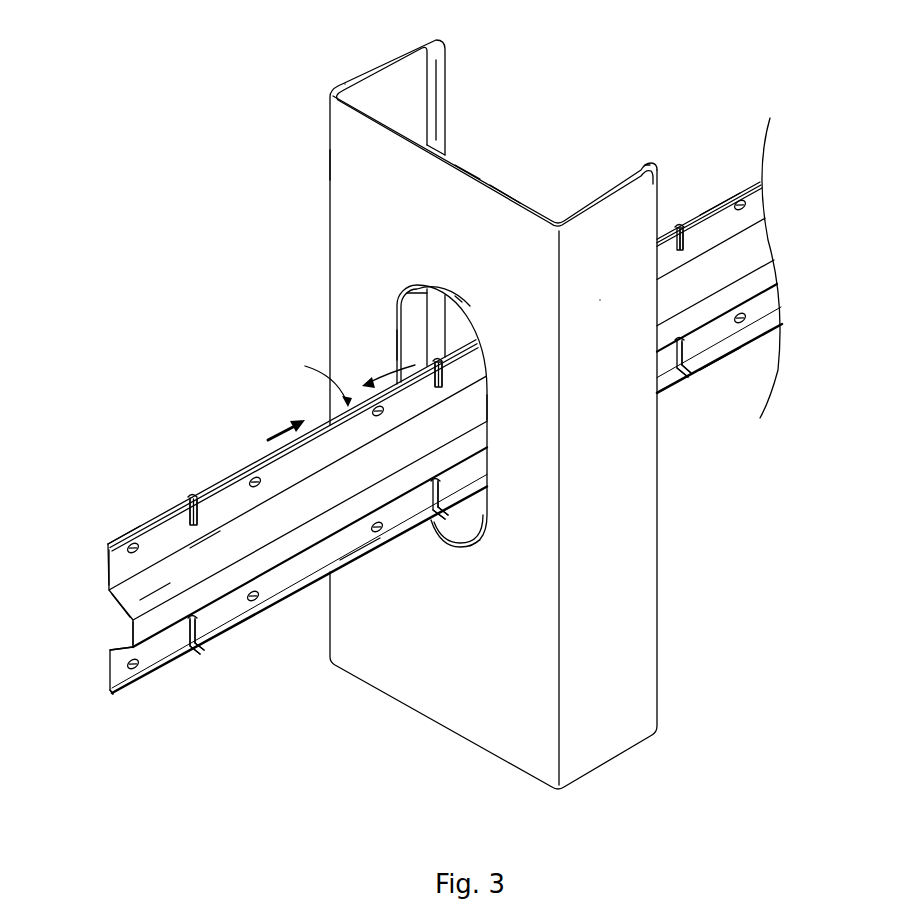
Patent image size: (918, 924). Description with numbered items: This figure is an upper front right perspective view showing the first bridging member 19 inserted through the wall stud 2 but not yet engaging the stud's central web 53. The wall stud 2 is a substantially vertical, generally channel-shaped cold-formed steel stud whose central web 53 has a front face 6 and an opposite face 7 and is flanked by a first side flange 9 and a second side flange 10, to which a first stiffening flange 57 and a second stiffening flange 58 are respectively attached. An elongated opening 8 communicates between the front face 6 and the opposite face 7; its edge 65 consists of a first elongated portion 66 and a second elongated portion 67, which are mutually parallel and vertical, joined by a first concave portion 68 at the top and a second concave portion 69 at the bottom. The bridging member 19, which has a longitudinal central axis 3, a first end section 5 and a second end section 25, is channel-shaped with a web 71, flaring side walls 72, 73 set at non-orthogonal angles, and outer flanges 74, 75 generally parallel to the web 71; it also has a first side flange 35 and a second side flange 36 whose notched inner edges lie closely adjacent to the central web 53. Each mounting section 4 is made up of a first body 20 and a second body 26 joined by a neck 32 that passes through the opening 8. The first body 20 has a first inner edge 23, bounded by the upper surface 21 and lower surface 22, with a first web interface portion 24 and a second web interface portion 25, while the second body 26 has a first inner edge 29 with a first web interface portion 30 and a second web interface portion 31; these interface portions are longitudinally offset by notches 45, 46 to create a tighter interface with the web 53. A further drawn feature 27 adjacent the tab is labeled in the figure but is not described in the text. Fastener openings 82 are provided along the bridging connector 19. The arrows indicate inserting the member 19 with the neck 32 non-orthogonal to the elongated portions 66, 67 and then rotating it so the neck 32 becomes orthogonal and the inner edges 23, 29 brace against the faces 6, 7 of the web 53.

The wall stud 2 is at (441, 32).
The central axis 3 is at (92, 657).
The mounting section 4 is at (173, 503).
The first end section 5 is at (108, 691).
The front face 6 is at (338, 167).
The opposite face 7 is at (498, 183).
The elongated opening 8 is at (455, 313).
The first side flange 9 is at (375, 68).
The second side flange 10 is at (637, 203).
The first bridging member 19 is at (350, 379).
The first body 20 is at (429, 390).
The upper surface 21 is at (136, 586).
The lower surface 22 is at (108, 561).
The first inner edge 23 is at (184, 526).
The first web interface portion 24 is at (180, 506).
The second web interface portion 25 is at (181, 649).
The second body 26 is at (448, 369).
The tab stem 27 is at (191, 626).
The first inner edge 29 is at (198, 510).
The first web interface portion 30 is at (688, 244).
The second web interface portion 31 is at (206, 636).
The neck 32 is at (201, 566).
The first side flange 35 is at (738, 189).
The second side flange 36 is at (745, 343).
The notch 45 is at (436, 360).
The notch 46 is at (205, 653).
The central web 53 is at (471, 166).
The first stiffening flange 57 is at (447, 66).
The second stiffening flange 58 is at (636, 162).
The edge 65 is at (419, 279).
The first elongated portion 66 is at (398, 344).
The second elongated portion 67 is at (488, 402).
The first concave portion 68 is at (463, 290).
The second concave portion 69 is at (468, 547).
The web 71 is at (129, 629).
The flaring side wall 72 is at (114, 607).
The flaring side wall 73 is at (112, 649).
The outer flange 74 is at (318, 437).
The outer flange 75 is at (360, 546).
The fastener opening 82 is at (255, 481).